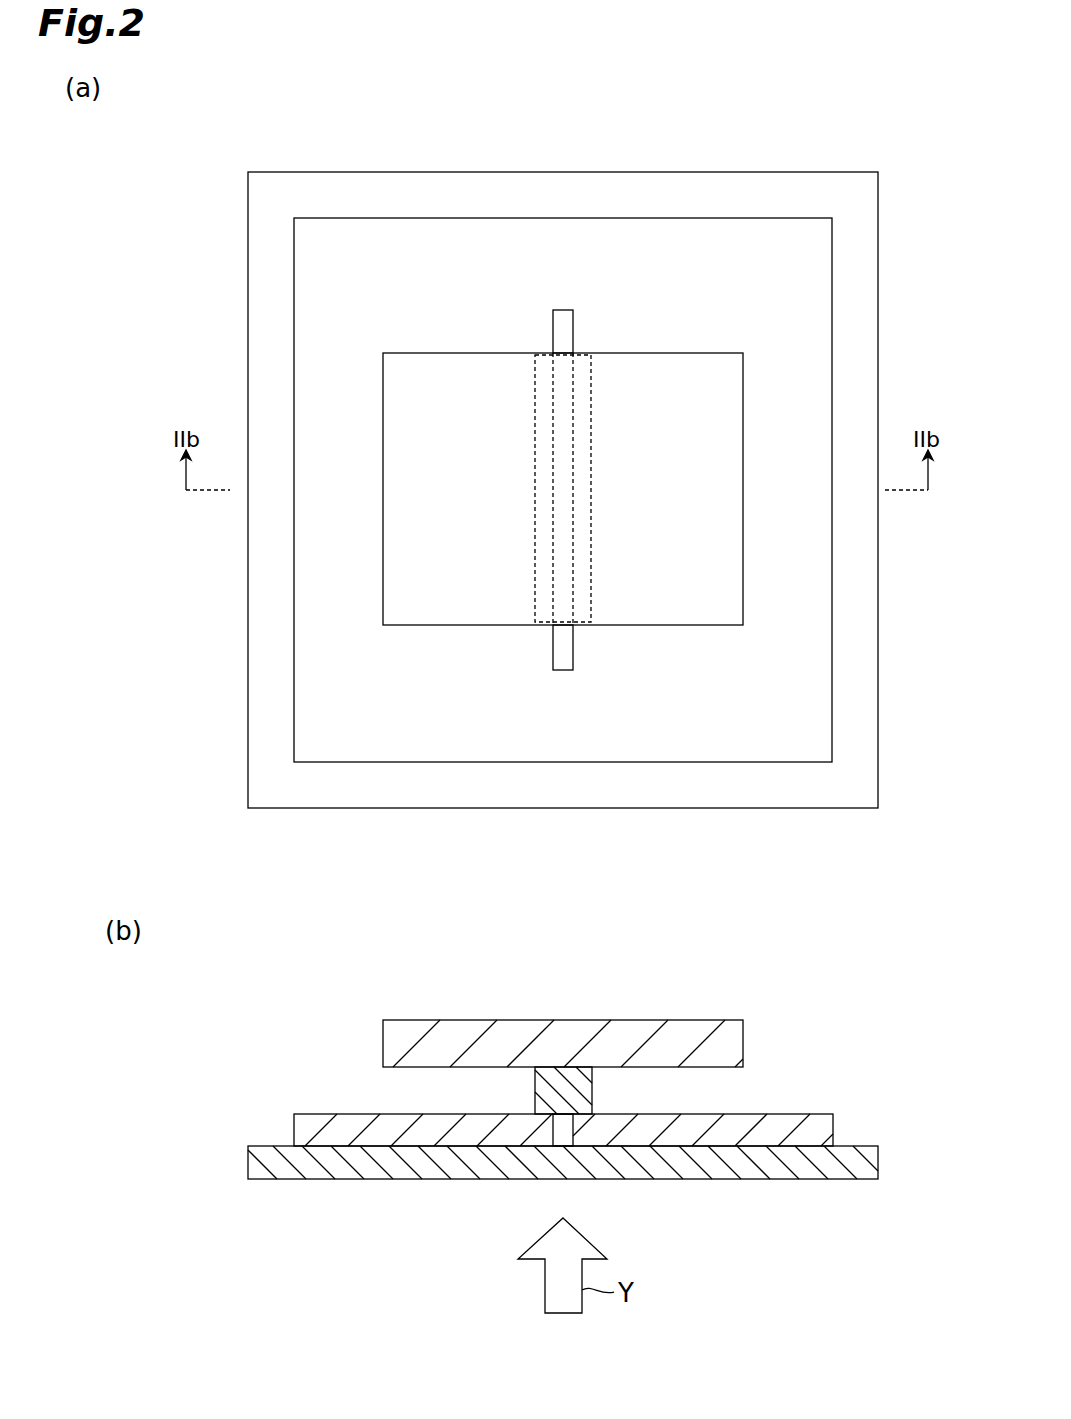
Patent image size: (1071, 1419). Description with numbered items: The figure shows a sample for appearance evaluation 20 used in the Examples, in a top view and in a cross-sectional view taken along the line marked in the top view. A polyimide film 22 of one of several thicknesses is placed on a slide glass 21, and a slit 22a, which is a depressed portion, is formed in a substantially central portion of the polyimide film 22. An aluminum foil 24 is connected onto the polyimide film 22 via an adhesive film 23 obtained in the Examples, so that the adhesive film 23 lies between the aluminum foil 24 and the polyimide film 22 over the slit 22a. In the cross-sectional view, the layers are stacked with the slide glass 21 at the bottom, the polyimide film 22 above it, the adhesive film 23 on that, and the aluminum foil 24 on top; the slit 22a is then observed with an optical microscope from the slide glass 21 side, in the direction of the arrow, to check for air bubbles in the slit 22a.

The sample for appearance evaluation 20 is at (232, 220).
The slide glass 21 is at (870, 757).
The polyimide film 22 is at (797, 571).
The slit 22a is at (563, 310).
The adhesive film 23 is at (592, 414).
The aluminum foil 24 is at (646, 597).